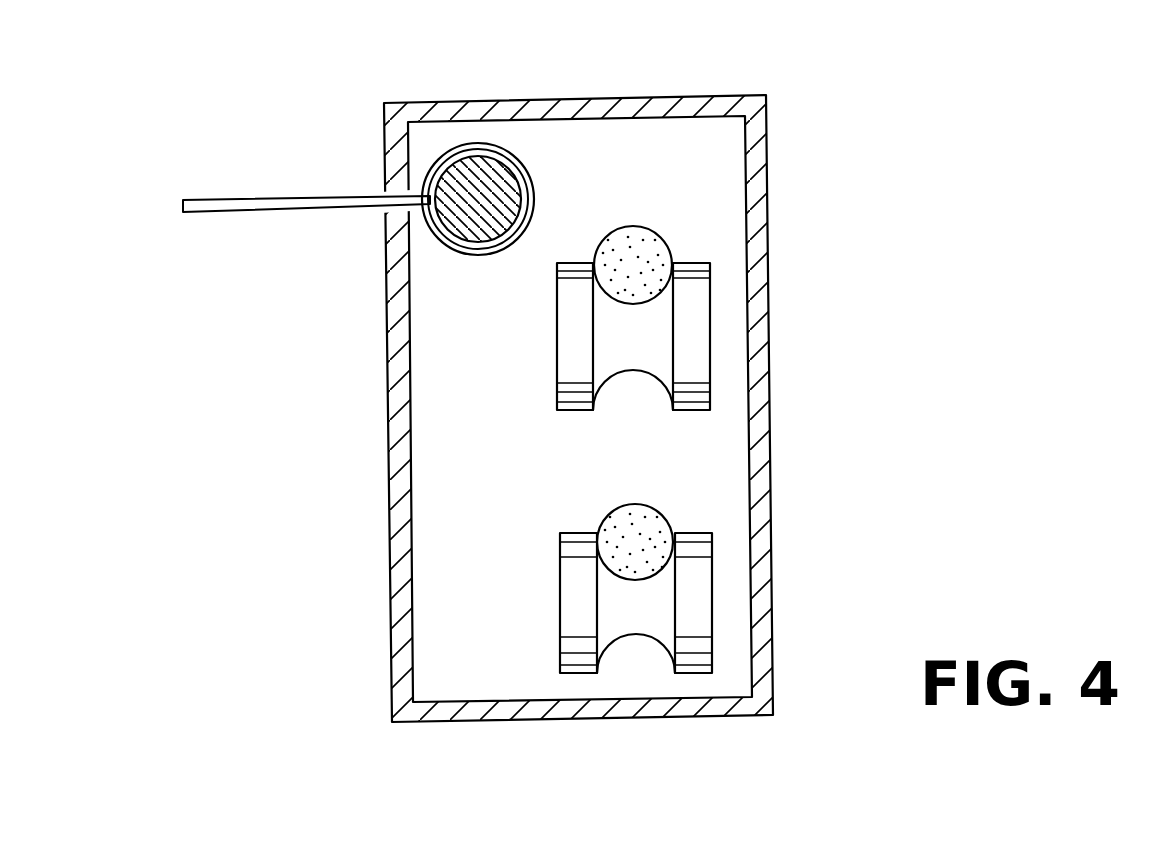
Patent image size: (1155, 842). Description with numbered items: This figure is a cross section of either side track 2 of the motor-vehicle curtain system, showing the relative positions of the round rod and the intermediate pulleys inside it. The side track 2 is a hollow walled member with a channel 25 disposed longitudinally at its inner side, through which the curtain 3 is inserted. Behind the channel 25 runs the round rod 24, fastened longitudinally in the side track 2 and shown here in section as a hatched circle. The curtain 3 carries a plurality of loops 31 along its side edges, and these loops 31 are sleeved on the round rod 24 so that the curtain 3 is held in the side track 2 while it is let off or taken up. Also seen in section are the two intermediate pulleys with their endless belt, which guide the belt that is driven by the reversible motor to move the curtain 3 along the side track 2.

The side track 2 is at (667, 92).
The curtain 3 is at (260, 206).
The round rod 24 is at (480, 217).
The channel 25 is at (392, 193).
The loop 31 is at (514, 154).